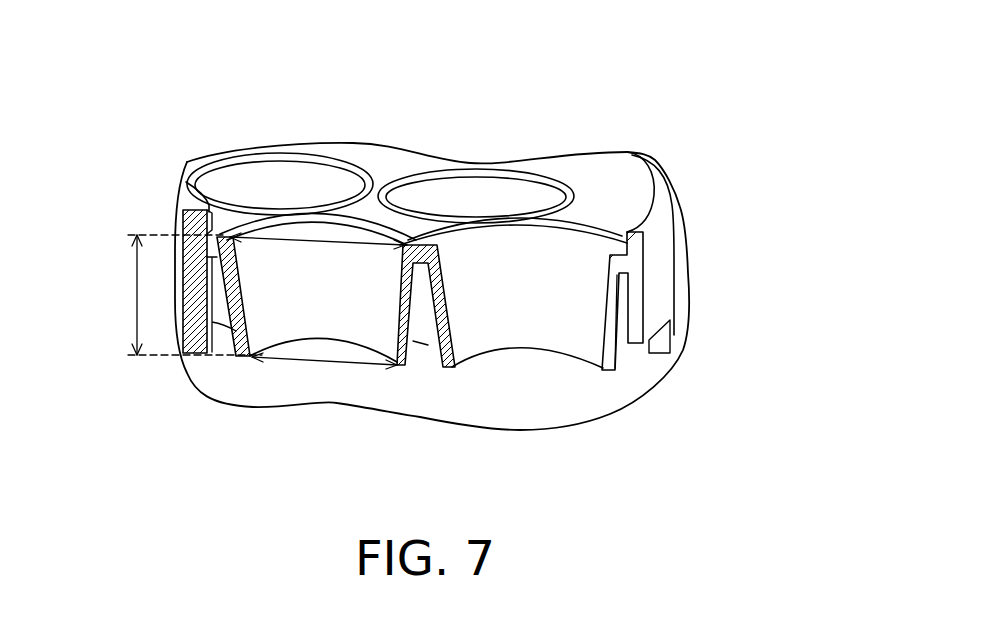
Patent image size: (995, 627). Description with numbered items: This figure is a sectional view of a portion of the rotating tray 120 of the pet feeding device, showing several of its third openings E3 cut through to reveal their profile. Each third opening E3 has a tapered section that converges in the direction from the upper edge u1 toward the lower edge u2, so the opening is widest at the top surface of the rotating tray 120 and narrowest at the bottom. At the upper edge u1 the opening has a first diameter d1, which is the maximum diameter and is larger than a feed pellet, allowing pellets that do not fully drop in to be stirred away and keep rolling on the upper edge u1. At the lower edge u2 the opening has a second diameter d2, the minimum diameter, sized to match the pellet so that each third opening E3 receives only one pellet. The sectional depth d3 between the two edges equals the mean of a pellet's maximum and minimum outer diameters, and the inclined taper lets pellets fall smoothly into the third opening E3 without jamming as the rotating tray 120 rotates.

The rotating tray 120 is at (689, 273).
The upper edge u1 is at (394, 160).
The lower edge u2 is at (607, 378).
The third opening E3 is at (575, 275).
The first diameter d1 is at (317, 256).
The second diameter d2 is at (324, 376).
The sectional depth d3 is at (178, 295).